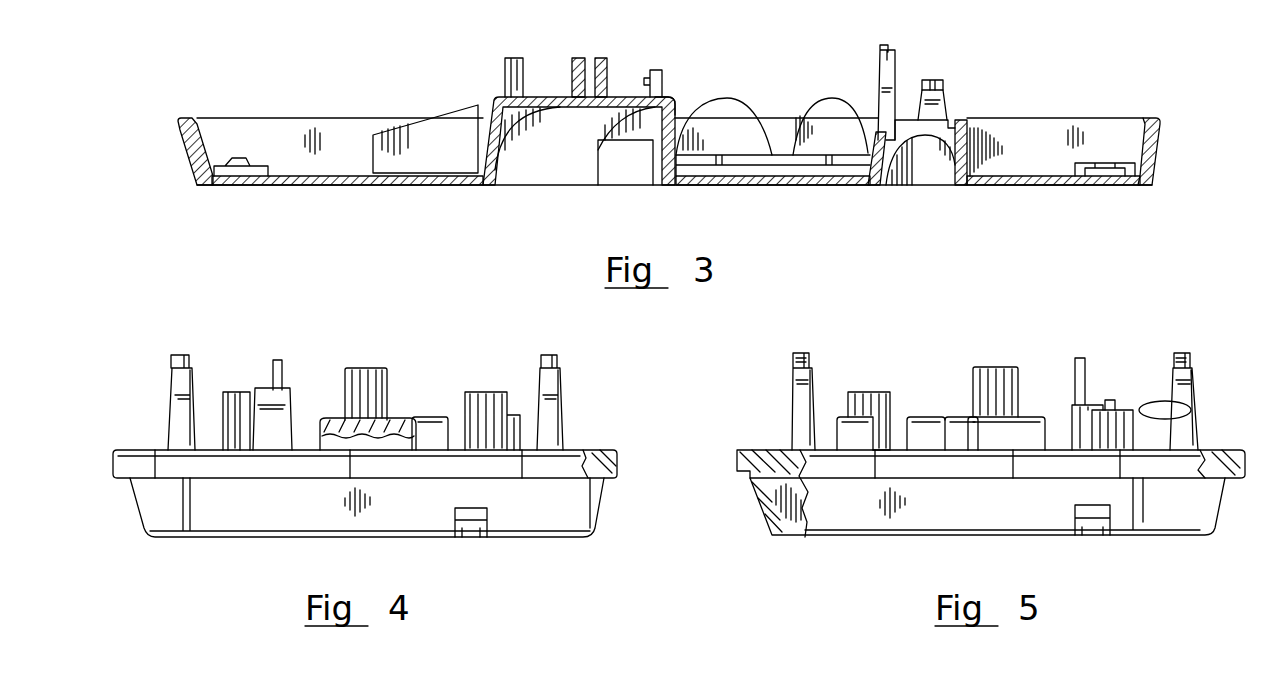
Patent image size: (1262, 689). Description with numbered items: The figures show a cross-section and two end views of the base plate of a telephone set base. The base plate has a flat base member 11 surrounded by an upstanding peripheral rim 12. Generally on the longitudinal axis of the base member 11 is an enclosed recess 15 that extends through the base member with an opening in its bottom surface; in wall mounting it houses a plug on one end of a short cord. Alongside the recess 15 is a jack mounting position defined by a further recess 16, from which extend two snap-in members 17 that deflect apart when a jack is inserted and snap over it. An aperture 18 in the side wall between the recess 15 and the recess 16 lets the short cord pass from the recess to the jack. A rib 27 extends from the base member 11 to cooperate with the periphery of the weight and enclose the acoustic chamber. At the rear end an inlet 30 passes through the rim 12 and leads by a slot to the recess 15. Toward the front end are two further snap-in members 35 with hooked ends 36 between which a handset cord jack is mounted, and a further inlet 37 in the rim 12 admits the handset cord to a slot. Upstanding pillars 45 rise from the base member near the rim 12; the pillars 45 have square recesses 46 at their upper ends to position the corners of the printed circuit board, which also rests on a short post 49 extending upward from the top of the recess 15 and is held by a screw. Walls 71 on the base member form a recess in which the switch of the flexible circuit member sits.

In FIG. 3, the flat base member 11 is at (371, 186).
In FIG. 3, the upstanding peripheral rim 12 is at (203, 135).
In FIG. 5, the upstanding peripheral rim 12 is at (763, 503).
In FIG. 3, the enclosed recess 15 is at (548, 125).
In FIG. 3, the further recess 16 is at (671, 97).
In FIG. 3, the snap-in members 17 is at (650, 70).
In FIG. 3, the aperture 18 is at (625, 178).
In FIG. 3, the rib 27 is at (773, 132).
In FIG. 4, the inlet 30 is at (470, 538).
In FIG. 3, the further snap-in members 35 is at (937, 100).
In FIG. 5, the further snap-in members 35 is at (1190, 409).
In FIG. 3, the hooked ends 36 is at (935, 82).
In FIG. 5, the hooked ends 36 is at (1108, 410).
In FIG. 5, the further inlet 37 is at (1092, 537).
In FIG. 3, the locating post 45 is at (515, 60).
In FIG. 4, the locating post 45 is at (179, 413).
In FIG. 5, the locating post 45 is at (798, 412).
In FIG. 5, the square recesses 46 is at (813, 360).
In FIG. 3, the short post 49 is at (601, 60).
In FIG. 4, the short post 49 is at (372, 385).
In FIG. 3, the walls 71 is at (456, 115).